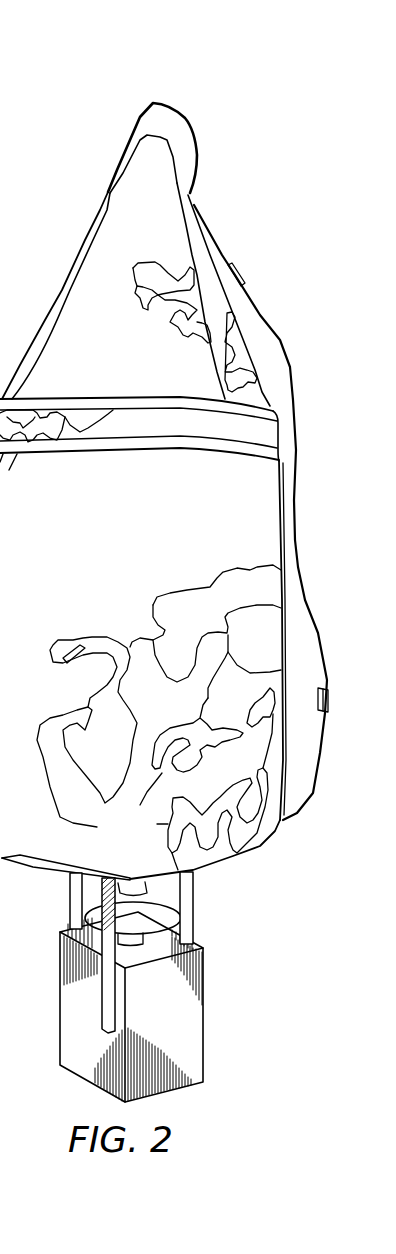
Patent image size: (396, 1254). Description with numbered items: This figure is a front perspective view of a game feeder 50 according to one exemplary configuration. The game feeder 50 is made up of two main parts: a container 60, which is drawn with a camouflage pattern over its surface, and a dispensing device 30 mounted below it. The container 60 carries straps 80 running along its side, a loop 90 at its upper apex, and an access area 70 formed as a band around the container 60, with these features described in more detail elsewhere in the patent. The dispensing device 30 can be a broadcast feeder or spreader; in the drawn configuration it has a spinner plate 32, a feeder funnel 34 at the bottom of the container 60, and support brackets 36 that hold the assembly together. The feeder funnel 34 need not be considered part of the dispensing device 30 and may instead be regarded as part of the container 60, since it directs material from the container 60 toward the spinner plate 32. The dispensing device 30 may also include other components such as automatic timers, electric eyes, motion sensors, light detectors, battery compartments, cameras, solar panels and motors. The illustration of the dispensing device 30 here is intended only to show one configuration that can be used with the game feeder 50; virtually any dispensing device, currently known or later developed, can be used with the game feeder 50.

The game feeder 50 is at (274, 86).
The container 60 is at (148, 577).
The access area 70 is at (129, 393).
The straps 80 is at (262, 311).
The loop 90 is at (153, 103).
The feeder funnel 34 is at (140, 878).
The dispensing device 30 is at (214, 1016).
The spinner plate 32 is at (153, 912).
The support brackets 36 is at (68, 900).